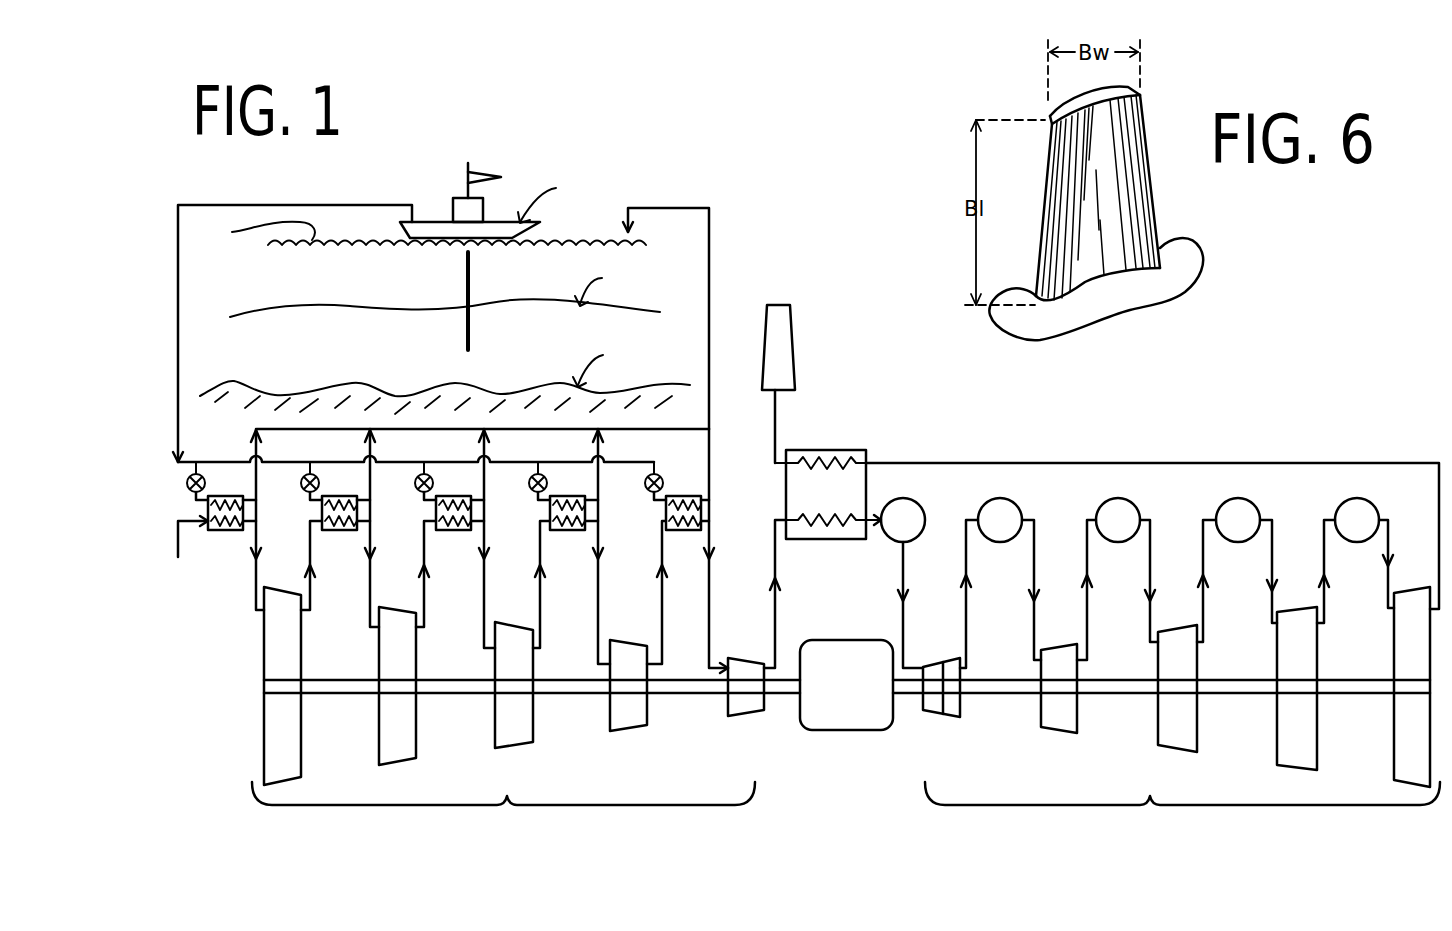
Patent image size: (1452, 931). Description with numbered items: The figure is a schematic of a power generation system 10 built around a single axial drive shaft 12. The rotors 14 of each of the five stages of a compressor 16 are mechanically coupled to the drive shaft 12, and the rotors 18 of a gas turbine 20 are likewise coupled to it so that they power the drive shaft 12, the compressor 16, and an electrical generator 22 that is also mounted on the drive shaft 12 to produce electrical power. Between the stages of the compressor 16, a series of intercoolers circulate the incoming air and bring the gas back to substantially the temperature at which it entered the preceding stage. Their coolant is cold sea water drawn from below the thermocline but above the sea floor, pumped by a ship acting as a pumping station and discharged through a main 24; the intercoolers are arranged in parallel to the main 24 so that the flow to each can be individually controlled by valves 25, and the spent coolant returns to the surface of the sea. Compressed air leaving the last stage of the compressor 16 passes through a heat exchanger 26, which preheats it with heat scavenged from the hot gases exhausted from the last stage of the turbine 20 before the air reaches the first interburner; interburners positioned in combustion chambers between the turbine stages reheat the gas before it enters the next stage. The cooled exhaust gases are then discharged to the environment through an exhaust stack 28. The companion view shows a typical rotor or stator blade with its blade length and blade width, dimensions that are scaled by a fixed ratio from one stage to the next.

The power generation system 10 is at (1124, 451).
The drive shaft 12 is at (787, 694).
The rotors 14 is at (514, 686).
The compressor 16 is at (473, 649).
The rotors 18 is at (1176, 689).
The gas turbine 20 is at (1160, 684).
The electrical generator 22 is at (833, 697).
The main 24 is at (178, 325).
The valves 25 is at (403, 478).
The heat exchanger 26 is at (805, 513).
The exhaust stack 28 is at (793, 333).